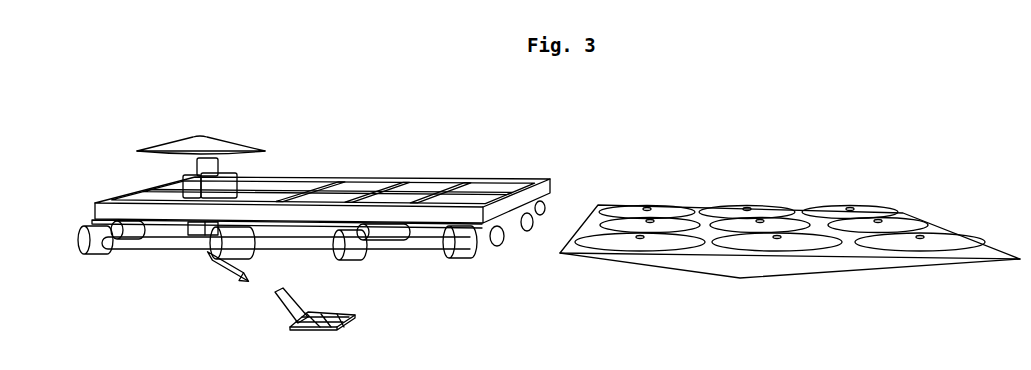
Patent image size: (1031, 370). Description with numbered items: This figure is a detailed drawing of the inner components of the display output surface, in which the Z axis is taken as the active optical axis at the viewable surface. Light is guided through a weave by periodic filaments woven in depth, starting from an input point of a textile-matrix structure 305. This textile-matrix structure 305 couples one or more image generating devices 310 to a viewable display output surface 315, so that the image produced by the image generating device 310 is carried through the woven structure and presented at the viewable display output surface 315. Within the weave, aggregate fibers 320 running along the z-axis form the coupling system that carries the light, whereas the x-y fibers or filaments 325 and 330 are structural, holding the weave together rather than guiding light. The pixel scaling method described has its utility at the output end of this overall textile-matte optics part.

The textile-matrix structure 305 is at (260, 287).
The image generating device 310 is at (357, 318).
The viewable display output surface 315 is at (803, 197).
The aggregate fibers 320 is at (181, 228).
The x-y fiber/filament 325 is at (415, 245).
The x-y fiber/filament 330 is at (383, 217).